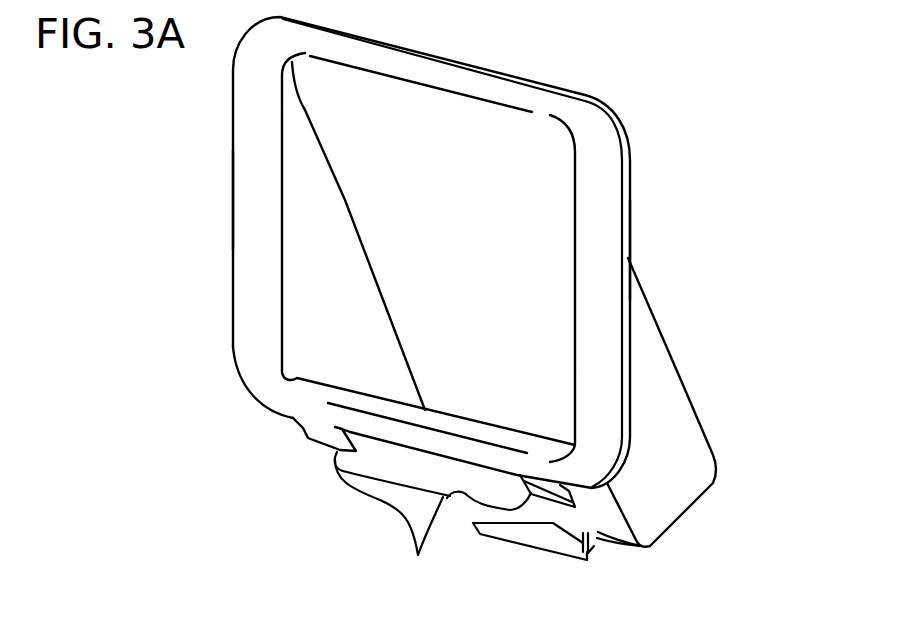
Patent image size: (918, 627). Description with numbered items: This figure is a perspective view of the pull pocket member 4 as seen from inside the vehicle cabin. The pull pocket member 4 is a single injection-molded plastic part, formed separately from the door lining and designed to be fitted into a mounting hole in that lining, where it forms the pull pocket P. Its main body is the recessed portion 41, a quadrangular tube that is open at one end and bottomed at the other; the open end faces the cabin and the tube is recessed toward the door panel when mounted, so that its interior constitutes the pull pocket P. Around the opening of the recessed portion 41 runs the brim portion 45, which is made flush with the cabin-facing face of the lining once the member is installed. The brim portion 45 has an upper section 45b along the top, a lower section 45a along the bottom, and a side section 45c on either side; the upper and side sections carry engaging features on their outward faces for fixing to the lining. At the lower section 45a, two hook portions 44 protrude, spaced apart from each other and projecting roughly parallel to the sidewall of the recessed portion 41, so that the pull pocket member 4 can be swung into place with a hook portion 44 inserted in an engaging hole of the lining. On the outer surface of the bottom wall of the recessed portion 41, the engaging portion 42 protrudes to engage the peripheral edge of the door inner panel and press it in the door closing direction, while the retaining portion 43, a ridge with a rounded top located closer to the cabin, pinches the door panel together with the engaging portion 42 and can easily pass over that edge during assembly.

The pull pocket member 4 is at (527, 73).
The recessed portion 41 is at (662, 398).
The engaging portion 42 is at (596, 547).
The retaining portion 43 is at (540, 528).
The hook portion 44 is at (418, 555).
The brim portion 45 is at (255, 200).
The lower section of the brim portion 45a is at (417, 436).
The upper section of the brim portion 45b is at (432, 68).
The side section of the brim portion 45c is at (255, 253).
The pull pocket P is at (452, 259).